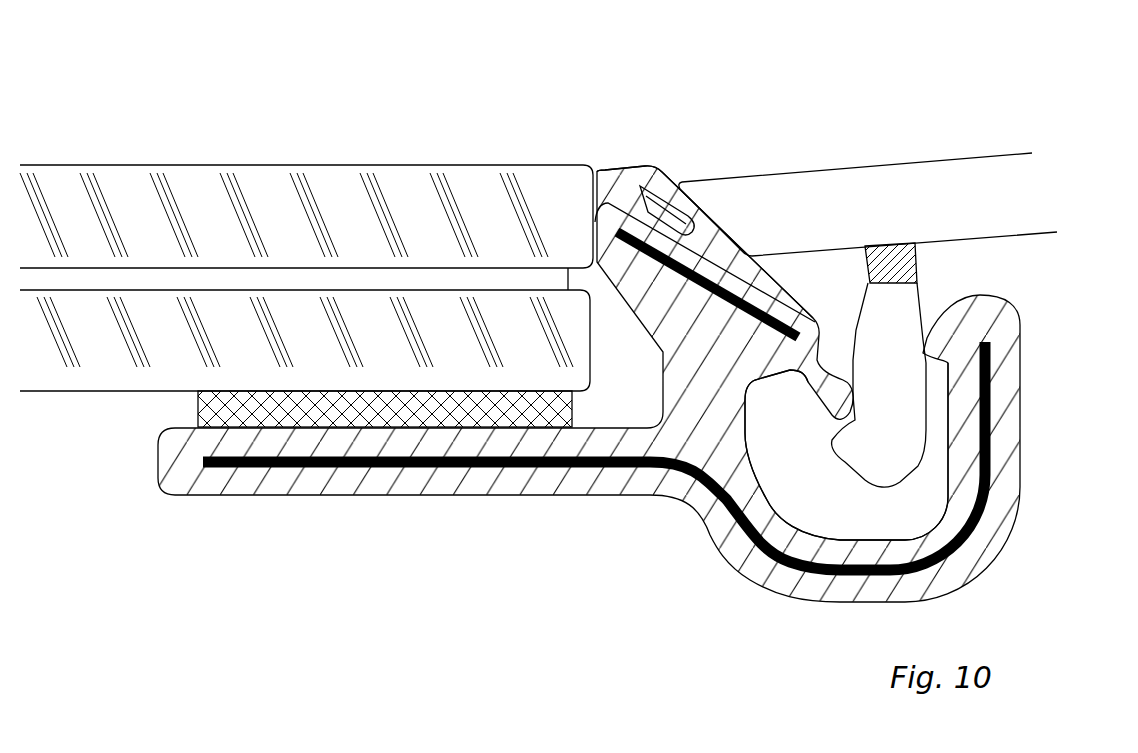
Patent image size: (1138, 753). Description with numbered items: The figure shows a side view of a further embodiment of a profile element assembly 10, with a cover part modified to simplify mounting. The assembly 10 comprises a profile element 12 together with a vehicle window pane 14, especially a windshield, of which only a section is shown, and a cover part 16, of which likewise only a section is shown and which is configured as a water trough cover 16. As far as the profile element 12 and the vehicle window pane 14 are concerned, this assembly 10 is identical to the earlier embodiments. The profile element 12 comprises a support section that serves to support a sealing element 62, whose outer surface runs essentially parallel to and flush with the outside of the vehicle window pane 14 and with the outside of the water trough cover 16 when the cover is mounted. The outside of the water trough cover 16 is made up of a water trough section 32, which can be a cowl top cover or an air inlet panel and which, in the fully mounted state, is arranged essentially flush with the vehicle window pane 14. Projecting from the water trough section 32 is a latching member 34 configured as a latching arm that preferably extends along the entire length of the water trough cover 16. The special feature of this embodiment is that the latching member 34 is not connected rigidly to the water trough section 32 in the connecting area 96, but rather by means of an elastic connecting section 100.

The profile element assembly 10 is at (520, 346).
The profile element 12 is at (589, 346).
The vehicle window pane 14 is at (413, 130).
The cover part 16 is at (868, 269).
The water trough section 32 is at (812, 224).
The latching member 34 is at (841, 493).
The sealing element 62 is at (651, 145).
The connecting area 96 is at (944, 263).
The elastic connecting section 100 is at (878, 272).